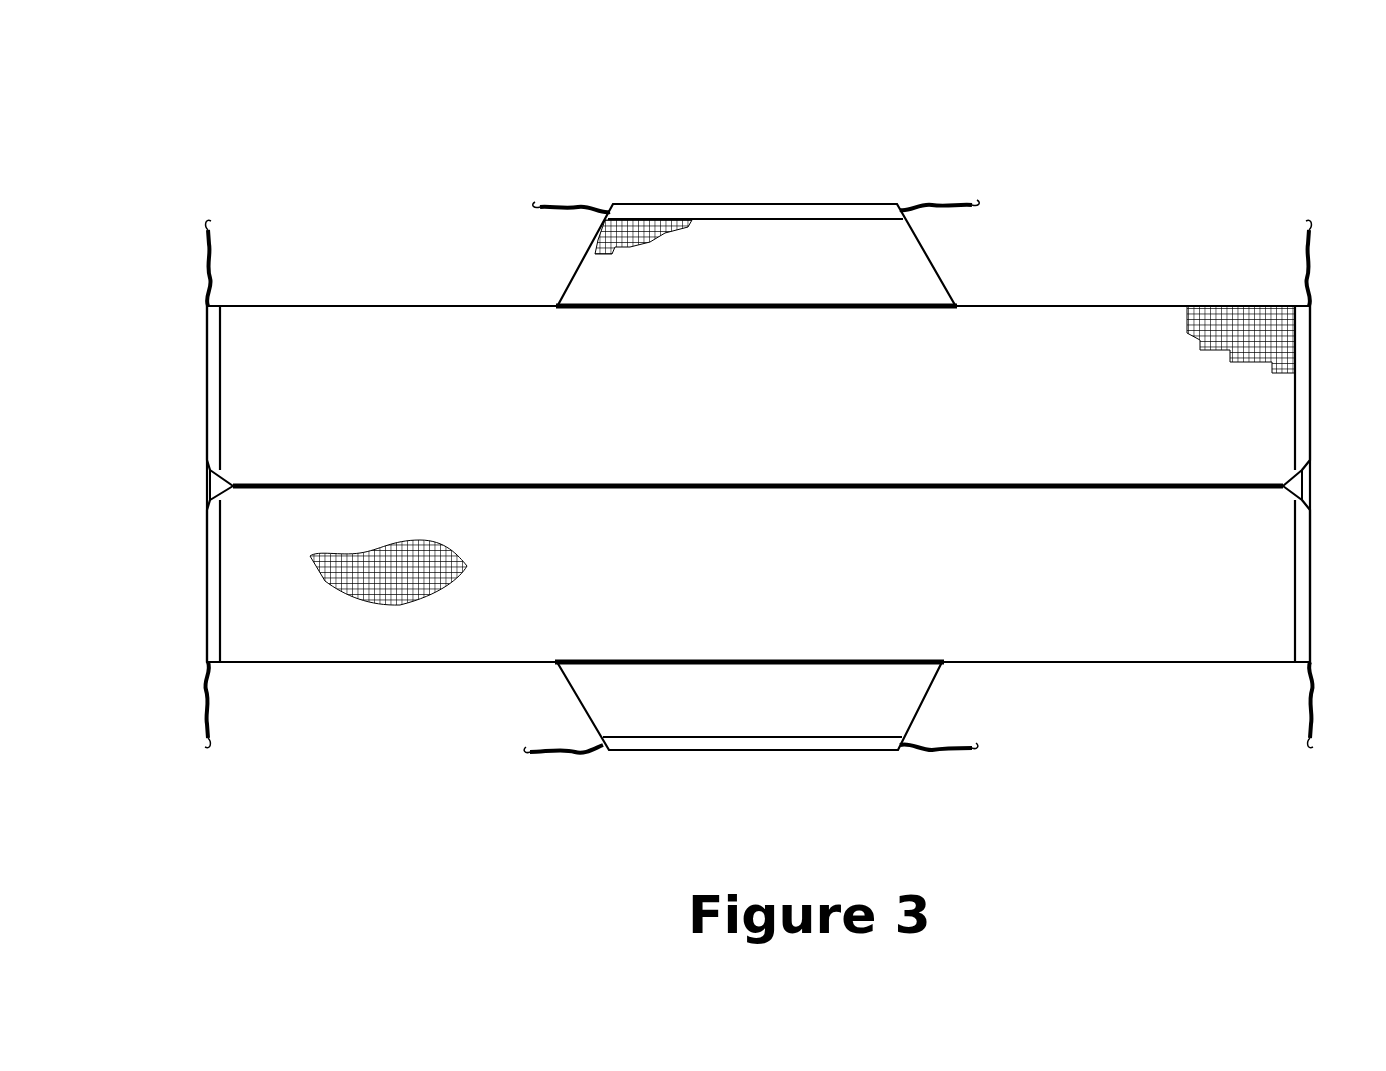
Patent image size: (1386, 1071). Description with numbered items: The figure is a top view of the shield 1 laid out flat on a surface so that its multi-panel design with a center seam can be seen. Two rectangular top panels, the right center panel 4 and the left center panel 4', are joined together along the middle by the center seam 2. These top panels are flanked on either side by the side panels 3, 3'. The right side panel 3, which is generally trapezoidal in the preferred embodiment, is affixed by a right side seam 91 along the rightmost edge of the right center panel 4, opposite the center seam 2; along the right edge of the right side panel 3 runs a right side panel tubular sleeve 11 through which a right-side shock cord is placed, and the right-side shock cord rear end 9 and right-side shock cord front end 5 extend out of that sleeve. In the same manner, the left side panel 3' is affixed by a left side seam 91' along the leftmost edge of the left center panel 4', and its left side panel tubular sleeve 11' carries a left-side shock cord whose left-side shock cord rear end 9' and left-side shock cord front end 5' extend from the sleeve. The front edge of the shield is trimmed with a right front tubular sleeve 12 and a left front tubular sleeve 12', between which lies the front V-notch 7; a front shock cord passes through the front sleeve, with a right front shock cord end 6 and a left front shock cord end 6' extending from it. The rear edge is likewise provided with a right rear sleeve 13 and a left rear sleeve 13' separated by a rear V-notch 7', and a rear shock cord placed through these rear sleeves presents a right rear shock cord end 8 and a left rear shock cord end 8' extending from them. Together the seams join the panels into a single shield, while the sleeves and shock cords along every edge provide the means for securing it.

The absorbent article 1 is at (509, 108).
The center seam 2 is at (600, 487).
The right side panel 3 is at (749, 739).
The left side panel 3' is at (756, 219).
The right center panel 4 is at (757, 666).
The left center panel 4' is at (757, 304).
The right-side shock cord front end 5 is at (939, 774).
The left-side shock cord front end 5' is at (939, 180).
The right front shock cord end 6 is at (1332, 705).
The left front shock cord end 6' is at (1335, 263).
The front V-notch 7 is at (198, 489).
The rear V-notch 7' is at (1318, 479).
The right rear shock cord end 8 is at (182, 705).
The left rear shock cord end 8' is at (184, 263).
The right-side shock cord rear end 9 is at (563, 778).
The left-side shock cord rear end 9' is at (571, 180).
The right side panel tubular sleeve 11 is at (752, 773).
The left side panel tubular sleeve 11' is at (749, 193).
The right front tubular sleeve 12 is at (1329, 581).
The left front tubular sleeve 12' is at (1278, 388).
The right rear sleeve 13 is at (185, 581).
The left rear sleeve 13' is at (180, 388).
The right side seam 91 is at (790, 277).
The left side seam 91' is at (810, 696).